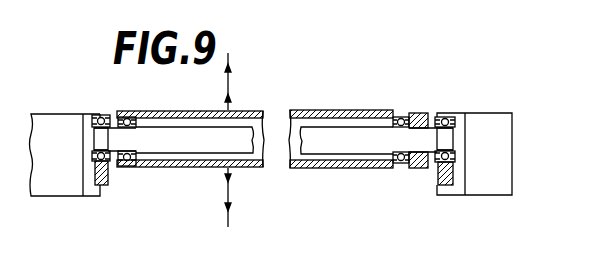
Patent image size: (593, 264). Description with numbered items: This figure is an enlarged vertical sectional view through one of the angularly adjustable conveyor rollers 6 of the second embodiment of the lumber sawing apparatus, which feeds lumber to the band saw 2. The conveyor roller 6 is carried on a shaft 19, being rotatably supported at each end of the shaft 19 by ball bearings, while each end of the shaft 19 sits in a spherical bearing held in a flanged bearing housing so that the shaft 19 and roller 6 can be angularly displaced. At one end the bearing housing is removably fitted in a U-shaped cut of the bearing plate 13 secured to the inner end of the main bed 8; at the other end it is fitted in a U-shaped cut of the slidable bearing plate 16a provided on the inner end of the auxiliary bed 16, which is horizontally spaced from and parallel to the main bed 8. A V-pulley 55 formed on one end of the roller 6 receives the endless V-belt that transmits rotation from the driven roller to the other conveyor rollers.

The band saw 2 is at (228, 92).
The V-pulley 55 is at (425, 113).
The conveyor roller 6 is at (330, 110).
The main bed 8 is at (62, 122).
The bearing plate 13 is at (105, 185).
The auxiliary bed 16 is at (497, 118).
The slidable bearing plate 16a is at (438, 174).
The shaft 19 is at (338, 154).